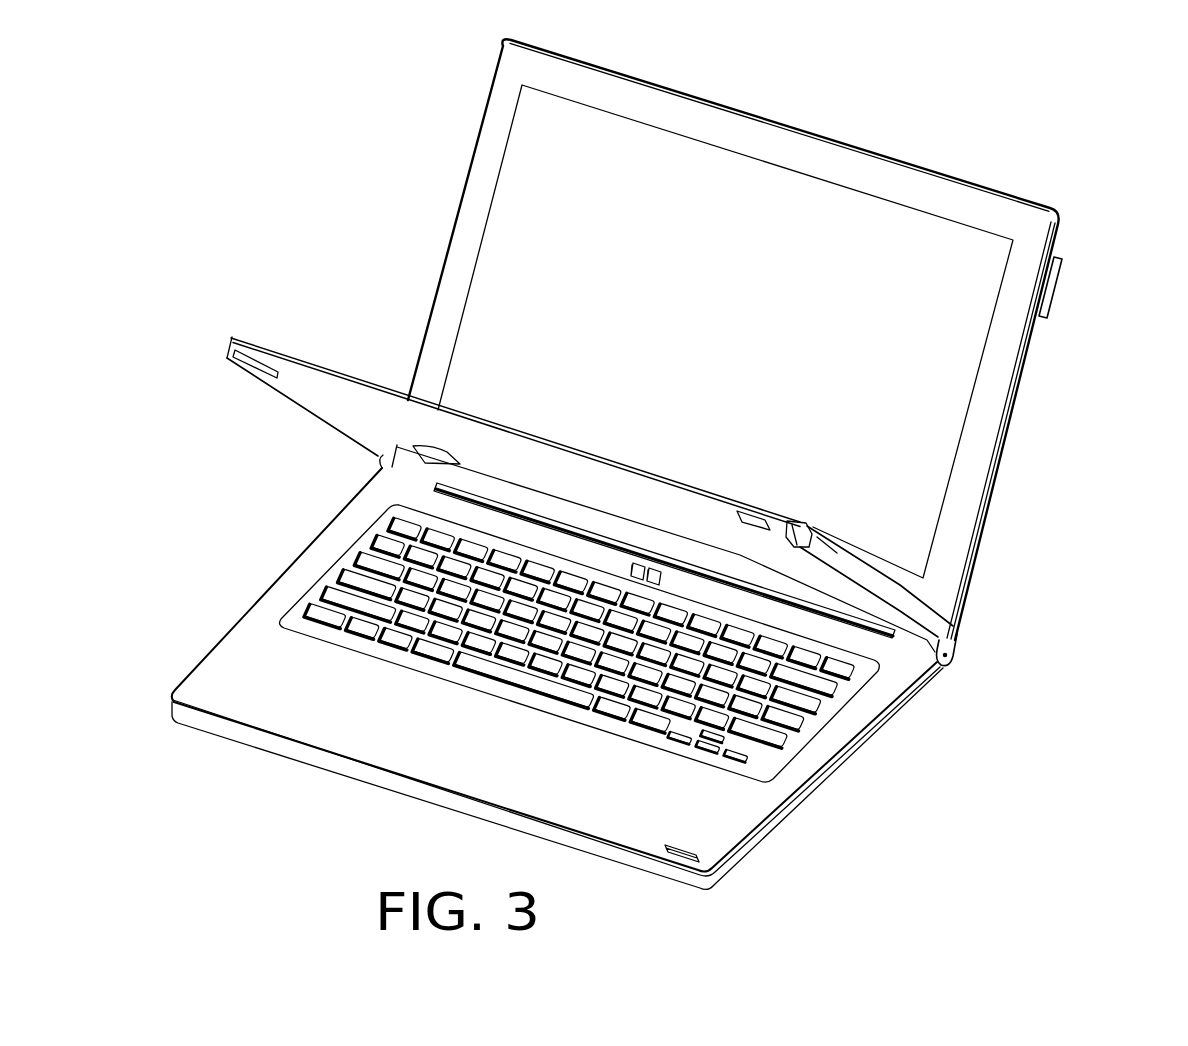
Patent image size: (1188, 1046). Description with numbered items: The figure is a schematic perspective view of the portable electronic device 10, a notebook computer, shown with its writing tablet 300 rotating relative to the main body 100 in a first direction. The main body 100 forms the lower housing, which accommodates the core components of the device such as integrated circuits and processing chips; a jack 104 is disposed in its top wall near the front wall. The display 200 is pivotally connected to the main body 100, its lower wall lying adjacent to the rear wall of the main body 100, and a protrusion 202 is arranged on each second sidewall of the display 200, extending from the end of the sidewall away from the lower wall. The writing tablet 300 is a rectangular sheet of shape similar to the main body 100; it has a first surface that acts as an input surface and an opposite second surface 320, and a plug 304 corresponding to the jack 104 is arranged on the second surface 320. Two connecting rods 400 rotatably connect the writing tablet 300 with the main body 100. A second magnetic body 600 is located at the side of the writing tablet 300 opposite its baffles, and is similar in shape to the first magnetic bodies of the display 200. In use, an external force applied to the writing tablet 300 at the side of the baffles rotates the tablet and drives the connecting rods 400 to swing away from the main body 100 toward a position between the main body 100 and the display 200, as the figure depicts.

The portable electronic device 10 is at (666, 464).
The main body 100 is at (557, 667).
The jack 104 is at (693, 851).
The display 200 is at (784, 339).
The protrusion 202 is at (1058, 275).
The writing tablet 300 is at (668, 445).
The plug 304 is at (765, 514).
The second surface 320 is at (363, 402).
The connecting rod 400 is at (912, 612).
The second magnetic body 600 is at (437, 453).